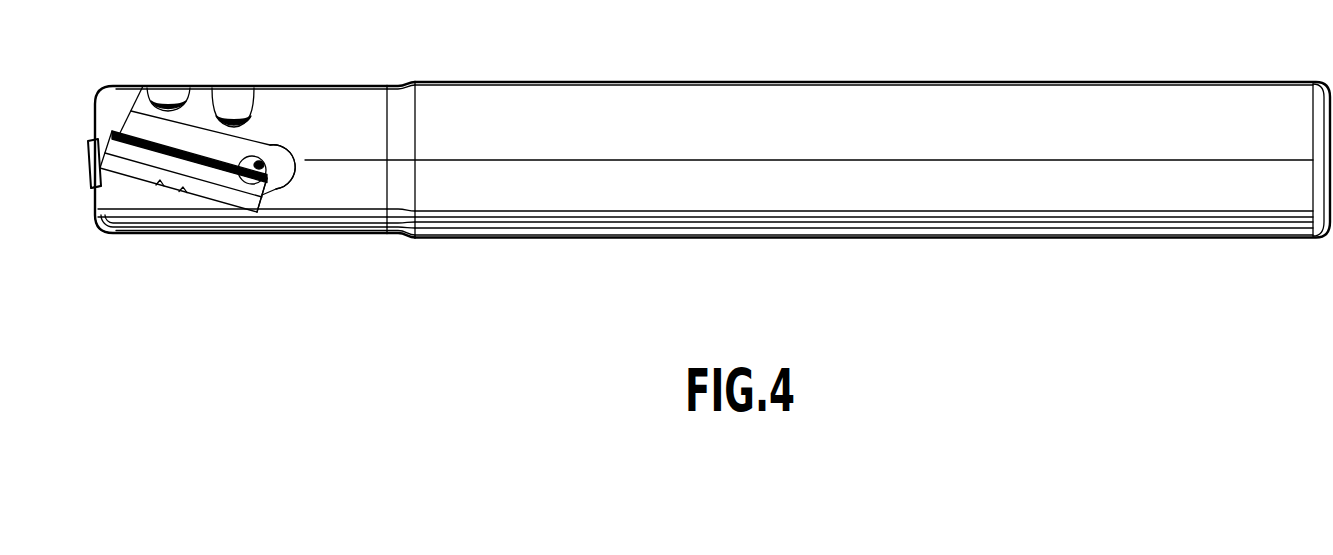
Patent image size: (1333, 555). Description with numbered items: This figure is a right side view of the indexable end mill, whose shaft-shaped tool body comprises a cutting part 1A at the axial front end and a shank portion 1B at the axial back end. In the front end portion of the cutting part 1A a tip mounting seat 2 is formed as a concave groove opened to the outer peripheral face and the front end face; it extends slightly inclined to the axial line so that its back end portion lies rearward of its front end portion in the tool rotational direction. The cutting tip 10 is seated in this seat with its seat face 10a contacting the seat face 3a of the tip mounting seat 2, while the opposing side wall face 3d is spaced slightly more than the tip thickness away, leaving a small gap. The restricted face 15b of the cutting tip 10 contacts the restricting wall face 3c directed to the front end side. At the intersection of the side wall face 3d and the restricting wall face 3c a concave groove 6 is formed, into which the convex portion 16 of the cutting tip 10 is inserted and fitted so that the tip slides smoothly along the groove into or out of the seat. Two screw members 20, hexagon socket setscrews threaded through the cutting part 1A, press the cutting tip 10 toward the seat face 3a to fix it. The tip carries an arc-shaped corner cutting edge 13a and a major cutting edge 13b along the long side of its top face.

The cutting part 1A is at (301, 77).
The shank portion 1B is at (564, 71).
The tip mounting seat 2 is at (136, 176).
The seat face 3a is at (161, 186).
The restricting wall face 3c is at (256, 206).
The side wall face 3d is at (212, 168).
The concave groove 6 is at (268, 167).
The cutting tip 10 is at (229, 213).
The seat face 10a is at (107, 225).
The corner cutting edge 13a is at (95, 140).
The major cutting edge 13b is at (98, 170).
The restricted face 15b is at (268, 193).
The convex portion 16 is at (270, 178).
The screw members 20 is at (233, 110).